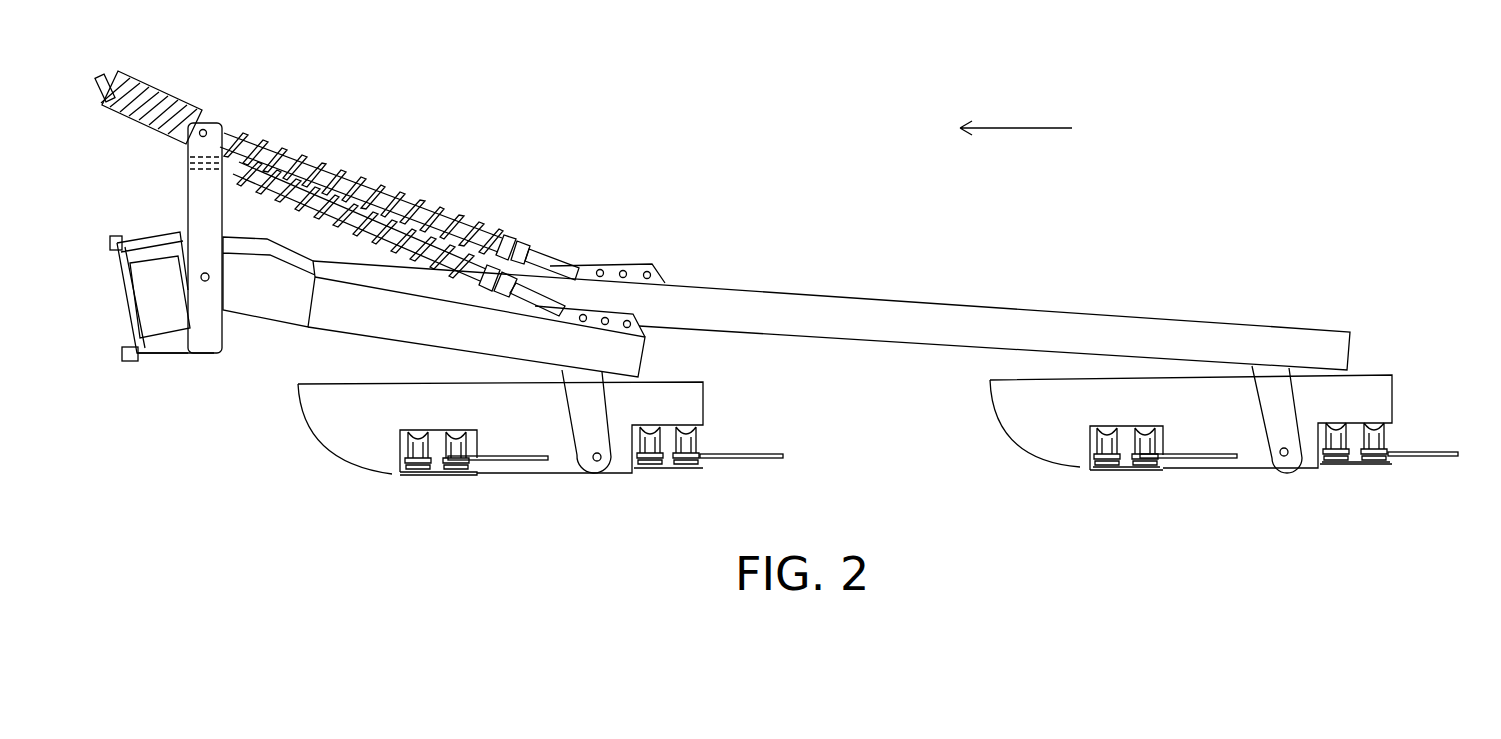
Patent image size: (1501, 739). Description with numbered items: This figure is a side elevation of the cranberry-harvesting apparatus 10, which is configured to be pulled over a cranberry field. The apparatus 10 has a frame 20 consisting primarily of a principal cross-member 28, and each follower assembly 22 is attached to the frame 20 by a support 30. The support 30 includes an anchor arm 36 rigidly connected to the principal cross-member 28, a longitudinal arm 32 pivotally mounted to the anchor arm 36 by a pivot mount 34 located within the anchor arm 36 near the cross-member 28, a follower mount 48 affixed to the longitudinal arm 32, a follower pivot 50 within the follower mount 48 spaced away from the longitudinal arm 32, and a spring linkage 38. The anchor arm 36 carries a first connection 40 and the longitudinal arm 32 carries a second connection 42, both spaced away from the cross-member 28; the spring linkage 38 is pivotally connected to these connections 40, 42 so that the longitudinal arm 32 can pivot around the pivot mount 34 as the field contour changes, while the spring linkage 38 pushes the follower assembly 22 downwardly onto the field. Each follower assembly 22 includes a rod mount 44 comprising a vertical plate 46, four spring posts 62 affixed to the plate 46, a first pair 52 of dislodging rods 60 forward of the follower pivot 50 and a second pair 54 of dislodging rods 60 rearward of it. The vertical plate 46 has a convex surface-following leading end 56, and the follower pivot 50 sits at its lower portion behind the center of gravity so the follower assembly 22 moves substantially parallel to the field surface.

The cranberry-harvesting apparatus 10 is at (760, 152).
The frame 20 is at (160, 305).
The principal cross-member 28 is at (160, 297).
The follower assembly 22 is at (456, 513).
The support 30 is at (826, 317).
The longitudinal arm 32 is at (615, 353).
The pivot mount 34 is at (208, 273).
The anchor arm 36 is at (207, 200).
The spring linkage 38 is at (440, 215).
The first connection 40 is at (207, 131).
The second connection 42 is at (568, 306).
The rod mount 44 is at (543, 412).
The vertical plate 46 is at (1150, 402).
The follower mount 48 is at (597, 390).
The follower pivot 50 is at (600, 462).
The first pair of dislodging rods 52 is at (1153, 466).
The second pair of dislodging rods 54 is at (1387, 460).
The convex surface-following leading end 56 is at (322, 436).
The dislodging rods 60 is at (508, 462).
The spring posts 62 is at (453, 443).